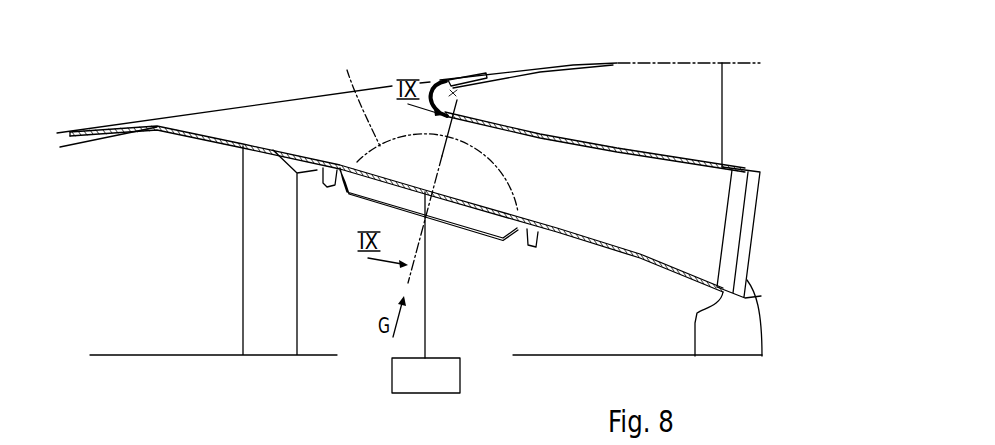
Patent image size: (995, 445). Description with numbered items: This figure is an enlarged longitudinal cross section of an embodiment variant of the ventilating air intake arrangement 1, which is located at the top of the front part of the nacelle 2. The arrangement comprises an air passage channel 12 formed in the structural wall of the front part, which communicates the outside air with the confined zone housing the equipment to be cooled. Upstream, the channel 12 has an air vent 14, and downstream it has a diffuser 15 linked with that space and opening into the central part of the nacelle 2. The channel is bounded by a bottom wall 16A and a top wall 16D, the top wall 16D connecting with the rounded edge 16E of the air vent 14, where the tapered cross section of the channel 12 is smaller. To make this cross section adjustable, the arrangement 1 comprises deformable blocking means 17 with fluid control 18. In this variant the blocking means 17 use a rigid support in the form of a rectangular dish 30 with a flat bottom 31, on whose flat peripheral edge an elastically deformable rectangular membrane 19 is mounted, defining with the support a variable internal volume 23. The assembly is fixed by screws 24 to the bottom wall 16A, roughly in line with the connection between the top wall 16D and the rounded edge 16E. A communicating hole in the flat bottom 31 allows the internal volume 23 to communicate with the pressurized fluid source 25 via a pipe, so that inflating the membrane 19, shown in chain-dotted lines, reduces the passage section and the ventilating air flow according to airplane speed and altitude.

The ventilating air intake arrangement 1 is at (265, 92).
The nacelle 2 is at (642, 62).
The air passage channel 12 is at (636, 211).
The air vent 14 is at (203, 112).
The diffuser 15 is at (757, 346).
The bottom wall of the channel 16A is at (638, 252).
The top wall of the channel 16D is at (587, 147).
The rounded edge of the air vent 16E is at (447, 80).
The deformable blocking means 17 is at (481, 243).
The fluid control 18 is at (373, 380).
The elastically deformable membrane 19 is at (363, 167).
The internal volume 23 is at (380, 193).
The screws 24 is at (318, 180).
The pressurized fluid source 25 is at (460, 380).
The rectangular dish 30 is at (521, 250).
The flat bottom 31 is at (433, 232).